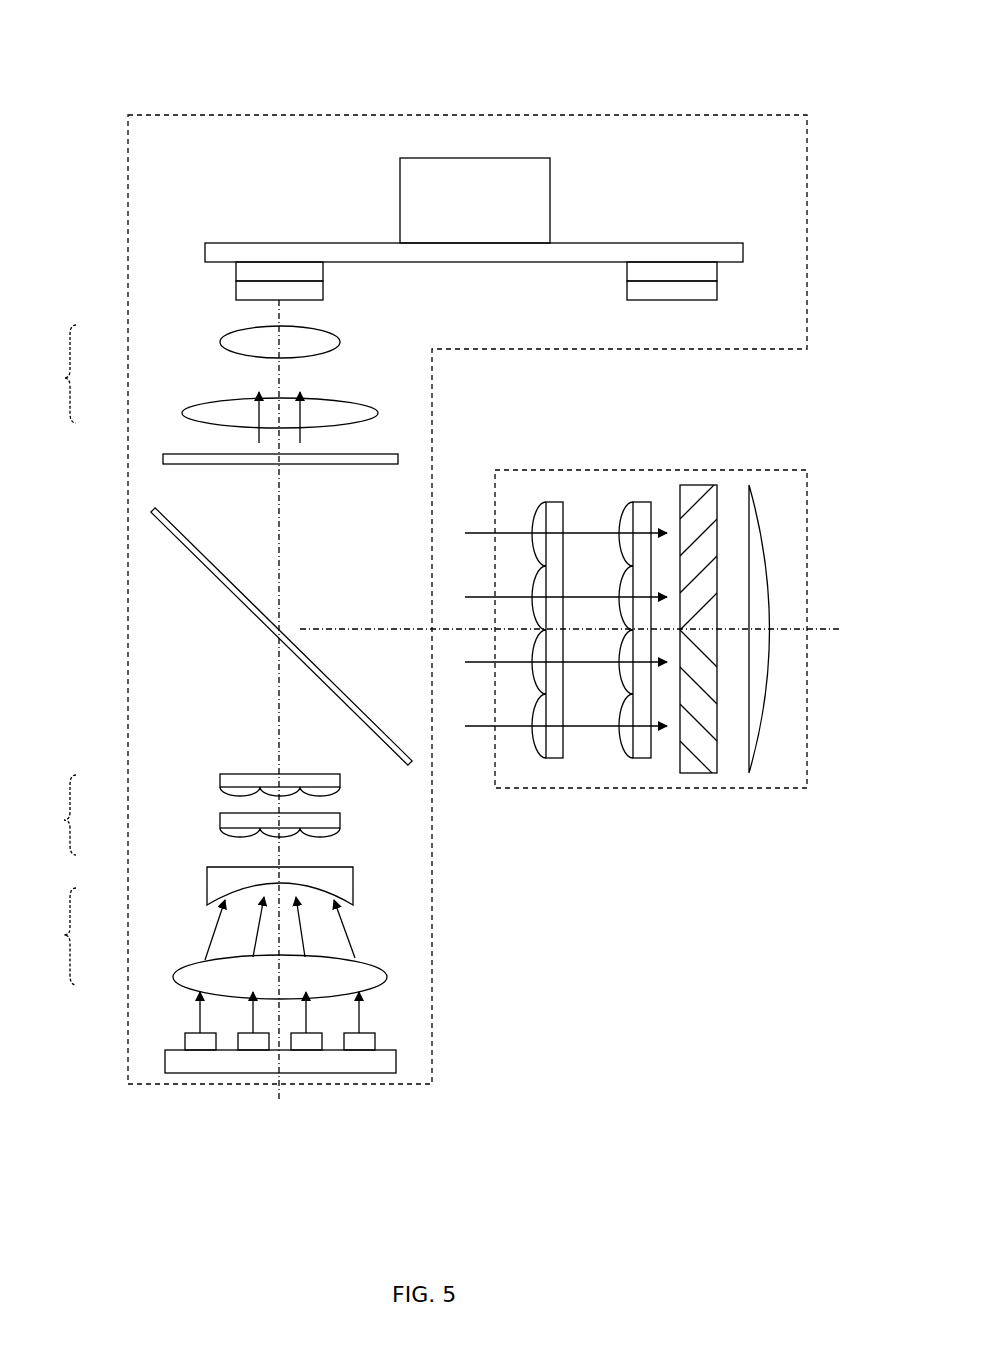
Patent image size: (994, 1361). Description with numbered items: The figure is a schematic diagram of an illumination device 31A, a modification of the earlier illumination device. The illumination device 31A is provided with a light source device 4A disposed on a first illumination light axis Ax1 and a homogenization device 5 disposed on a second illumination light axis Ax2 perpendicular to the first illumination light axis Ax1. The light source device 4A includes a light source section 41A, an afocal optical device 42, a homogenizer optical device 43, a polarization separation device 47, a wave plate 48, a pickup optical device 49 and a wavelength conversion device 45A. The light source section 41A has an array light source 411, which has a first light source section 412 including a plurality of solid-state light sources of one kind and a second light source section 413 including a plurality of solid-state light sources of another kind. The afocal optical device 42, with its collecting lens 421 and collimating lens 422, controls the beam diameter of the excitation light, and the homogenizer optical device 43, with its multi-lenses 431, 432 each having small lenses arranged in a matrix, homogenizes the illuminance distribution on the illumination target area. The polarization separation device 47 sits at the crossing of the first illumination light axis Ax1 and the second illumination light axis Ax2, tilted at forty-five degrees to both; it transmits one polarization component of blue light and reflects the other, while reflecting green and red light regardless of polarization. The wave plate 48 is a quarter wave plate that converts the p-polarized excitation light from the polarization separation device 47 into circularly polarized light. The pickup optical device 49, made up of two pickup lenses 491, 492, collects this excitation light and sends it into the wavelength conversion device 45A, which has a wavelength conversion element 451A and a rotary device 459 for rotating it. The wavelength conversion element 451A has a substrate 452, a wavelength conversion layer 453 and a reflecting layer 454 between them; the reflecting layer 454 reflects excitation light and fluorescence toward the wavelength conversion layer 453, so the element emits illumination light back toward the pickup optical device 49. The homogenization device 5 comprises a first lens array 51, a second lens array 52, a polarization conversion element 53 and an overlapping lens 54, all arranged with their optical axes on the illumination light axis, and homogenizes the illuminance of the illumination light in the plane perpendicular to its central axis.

The illumination device 31A is at (760, 92).
The light source device 4A is at (662, 115).
The wavelength conversion device 45A is at (775, 190).
The rotary device 459 is at (550, 200).
The substrate 452 is at (693, 262).
The wavelength conversion element 451A is at (745, 258).
The reflecting layer 454 is at (318, 270).
The wavelength conversion layer 453 is at (316, 290).
The pickup optical device 49 is at (207, 384).
The pickup lens 492 is at (220, 342).
The pickup lens 491 is at (183, 413).
The wave plate 48 is at (163, 458).
The polarization separation device 47 is at (185, 545).
The first illumination light axis Ax1 is at (278, 708).
The second illumination light axis Ax2 is at (826, 629).
The homogenization device 5 is at (800, 470).
The first lens array 51 is at (552, 502).
The second lens array 52 is at (640, 502).
The polarization conversion element 53 is at (694, 485).
The overlapping lens 54 is at (751, 485).
The homogenizer optical device 43 is at (188, 814).
The multi-lens 432 is at (220, 778).
The multi-lens 431 is at (220, 818).
The afocal optical device 42 is at (211, 950).
The collimating lens 422 is at (207, 880).
The collecting lens 421 is at (173, 977).
The light source section 41A is at (415, 1035).
The array light source 411 is at (396, 1058).
The second light source section 413 is at (193, 1052).
The first light source section 412 is at (248, 1052).